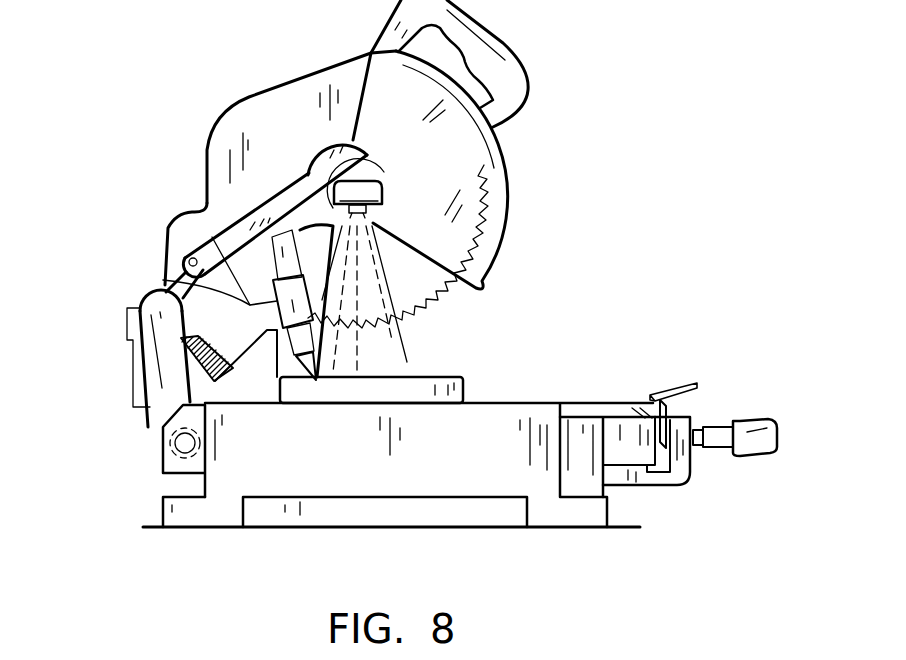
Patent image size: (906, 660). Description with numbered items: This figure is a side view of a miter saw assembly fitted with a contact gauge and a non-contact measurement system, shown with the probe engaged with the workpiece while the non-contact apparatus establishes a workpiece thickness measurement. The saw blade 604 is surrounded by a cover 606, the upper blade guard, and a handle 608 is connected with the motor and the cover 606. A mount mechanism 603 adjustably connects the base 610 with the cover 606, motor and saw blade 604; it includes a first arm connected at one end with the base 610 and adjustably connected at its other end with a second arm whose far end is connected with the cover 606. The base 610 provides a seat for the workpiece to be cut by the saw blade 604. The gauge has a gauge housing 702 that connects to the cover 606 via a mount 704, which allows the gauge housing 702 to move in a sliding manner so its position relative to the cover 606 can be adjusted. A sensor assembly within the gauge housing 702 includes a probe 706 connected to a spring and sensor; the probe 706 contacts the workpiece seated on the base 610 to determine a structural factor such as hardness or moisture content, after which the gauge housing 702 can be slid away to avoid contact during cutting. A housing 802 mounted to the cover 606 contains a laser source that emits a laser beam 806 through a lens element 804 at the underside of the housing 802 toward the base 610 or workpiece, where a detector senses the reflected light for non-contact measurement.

The mount mechanism 603 is at (147, 350).
The saw blade 604 is at (413, 290).
The cover 606 is at (272, 128).
The handle 608 is at (503, 53).
The base 610 is at (253, 472).
The gauge housing 702 is at (162, 287).
The mount 704 is at (212, 236).
The probe 706 is at (233, 363).
The housing 802 is at (380, 194).
The nozzle 804 is at (366, 208).
The laser beam 806 is at (385, 221).